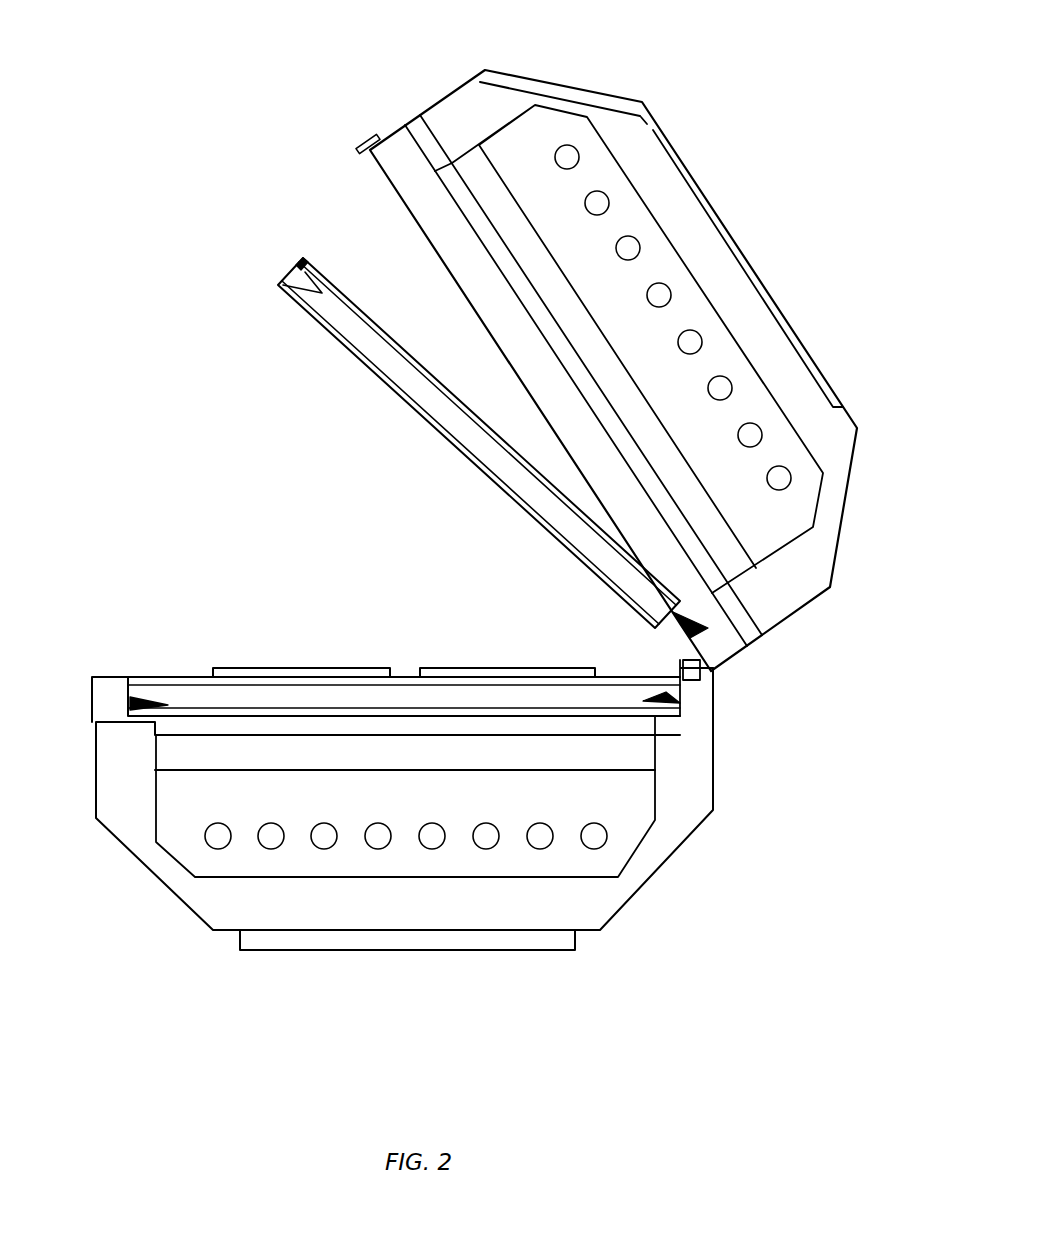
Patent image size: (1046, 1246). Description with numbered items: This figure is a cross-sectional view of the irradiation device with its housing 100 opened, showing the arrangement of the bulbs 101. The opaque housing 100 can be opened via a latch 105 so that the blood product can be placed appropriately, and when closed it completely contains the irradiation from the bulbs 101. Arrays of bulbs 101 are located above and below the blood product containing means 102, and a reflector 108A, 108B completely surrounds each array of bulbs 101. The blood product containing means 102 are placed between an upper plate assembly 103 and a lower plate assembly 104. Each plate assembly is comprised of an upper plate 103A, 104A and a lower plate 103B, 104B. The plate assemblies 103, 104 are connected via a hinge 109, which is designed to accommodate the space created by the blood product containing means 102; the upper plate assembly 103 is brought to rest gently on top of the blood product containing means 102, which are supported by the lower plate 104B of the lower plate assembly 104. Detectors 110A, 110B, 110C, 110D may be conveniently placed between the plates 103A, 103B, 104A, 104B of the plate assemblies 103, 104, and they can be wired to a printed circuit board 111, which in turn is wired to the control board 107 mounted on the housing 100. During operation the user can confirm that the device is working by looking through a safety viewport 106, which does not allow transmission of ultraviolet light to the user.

The housing 100 is at (693, 762).
The bulbs 101 is at (790, 482).
The blood product containing means 102 is at (417, 668).
The upper plate assembly 103 is at (383, 333).
The upper plate of upper plate assembly 103A is at (458, 428).
The lower plate of upper plate assembly 103B is at (483, 483).
The lower plate assembly 104 is at (162, 676).
The upper plate of lower plate assembly 104A is at (187, 677).
The lower plate of lower plate assembly 104B is at (198, 708).
The latch 105 is at (358, 148).
The safety viewport 106 is at (708, 202).
The control board 107 is at (548, 82).
The reflector 108A is at (780, 400).
The reflector 108B is at (657, 818).
The hinge 109 is at (700, 665).
The detector 110A is at (128, 700).
The detector 110B is at (682, 697).
The detector 110C is at (683, 637).
The detector 110D is at (300, 277).
The printed circuit board 111 is at (643, 108).